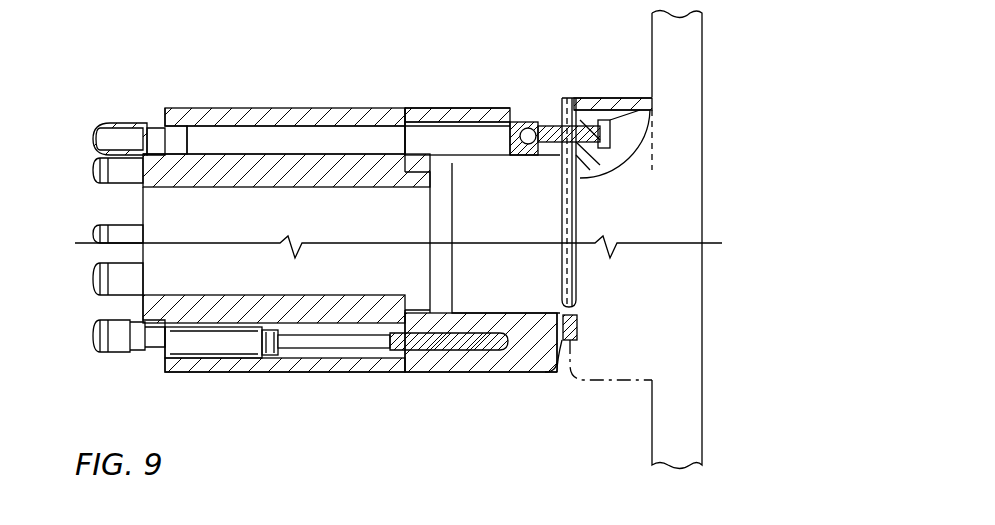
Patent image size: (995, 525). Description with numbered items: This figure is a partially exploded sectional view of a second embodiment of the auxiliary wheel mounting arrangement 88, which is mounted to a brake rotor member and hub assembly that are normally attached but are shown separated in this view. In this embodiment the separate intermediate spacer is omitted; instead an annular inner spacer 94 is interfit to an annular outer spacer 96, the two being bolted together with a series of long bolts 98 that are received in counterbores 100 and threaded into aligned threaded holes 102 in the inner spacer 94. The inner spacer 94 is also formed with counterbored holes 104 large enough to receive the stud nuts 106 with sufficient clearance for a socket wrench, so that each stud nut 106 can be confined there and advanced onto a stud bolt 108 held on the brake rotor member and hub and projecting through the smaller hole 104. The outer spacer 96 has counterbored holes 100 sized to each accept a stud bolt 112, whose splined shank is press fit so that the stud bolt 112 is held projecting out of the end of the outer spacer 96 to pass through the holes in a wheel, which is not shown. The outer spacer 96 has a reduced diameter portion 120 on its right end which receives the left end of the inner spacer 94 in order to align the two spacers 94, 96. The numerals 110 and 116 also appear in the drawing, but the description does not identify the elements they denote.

The mounting arrangement 88 is at (207, 62).
The annular inner spacer 94 is at (427, 110).
The annular outer spacer 96 is at (193, 108).
The long bolts 98 is at (343, 338).
The counterbores 100 is at (210, 357).
The threaded holes 102 is at (496, 352).
The counterbored holes 104 is at (462, 137).
The stud nuts 106 is at (520, 120).
The stud bolts 108 is at (548, 118).
The body 110 is at (232, 137).
The stud bolt 112 is at (115, 133).
The nut 116 is at (98, 302).
The reduced diameter portion 120 is at (422, 338).